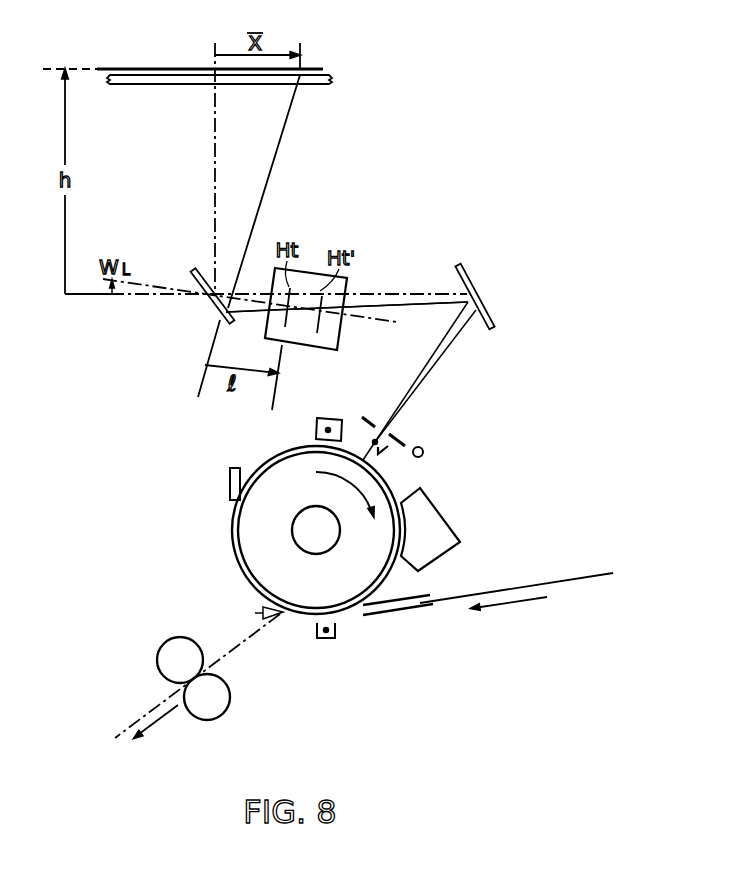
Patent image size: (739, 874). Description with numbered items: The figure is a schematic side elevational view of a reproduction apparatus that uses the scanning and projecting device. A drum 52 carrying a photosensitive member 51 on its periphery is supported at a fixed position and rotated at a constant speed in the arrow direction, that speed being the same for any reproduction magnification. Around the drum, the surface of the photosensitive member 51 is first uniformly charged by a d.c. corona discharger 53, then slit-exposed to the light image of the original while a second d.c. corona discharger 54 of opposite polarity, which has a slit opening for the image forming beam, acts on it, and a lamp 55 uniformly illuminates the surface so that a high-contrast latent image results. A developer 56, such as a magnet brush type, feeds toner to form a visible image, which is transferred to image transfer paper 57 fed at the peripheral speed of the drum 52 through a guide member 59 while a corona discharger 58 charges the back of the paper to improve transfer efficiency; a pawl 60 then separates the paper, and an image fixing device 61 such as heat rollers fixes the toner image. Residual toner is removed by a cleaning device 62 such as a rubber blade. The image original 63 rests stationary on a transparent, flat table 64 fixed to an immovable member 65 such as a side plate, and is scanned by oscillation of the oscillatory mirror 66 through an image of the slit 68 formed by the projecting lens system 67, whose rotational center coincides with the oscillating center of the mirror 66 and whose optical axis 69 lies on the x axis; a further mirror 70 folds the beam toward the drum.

The photosensitive member 51 is at (233, 525).
The drum 52 is at (255, 568).
The d.c. corona discharger 53 is at (322, 413).
The d.c. corona discharger 54 is at (364, 430).
The lamp 55 is at (423, 453).
The developer 56 is at (443, 512).
The image transfer paper 57 is at (560, 583).
The corona discharger 58 is at (328, 643).
The guide member 59 is at (412, 610).
The pawl 60 is at (199, 669).
The image fixing device 61 is at (170, 640).
The cleaning device 62 is at (230, 470).
The image original 63 is at (327, 70).
The transparent flat table 64 is at (312, 87).
The immovable member 65 is at (333, 79).
The oscillatory mirror 66 is at (230, 325).
The projecting lens system 67 is at (300, 342).
The slit 68 is at (397, 440).
The optical axis 69 is at (418, 292).
The mirror 70 is at (467, 273).